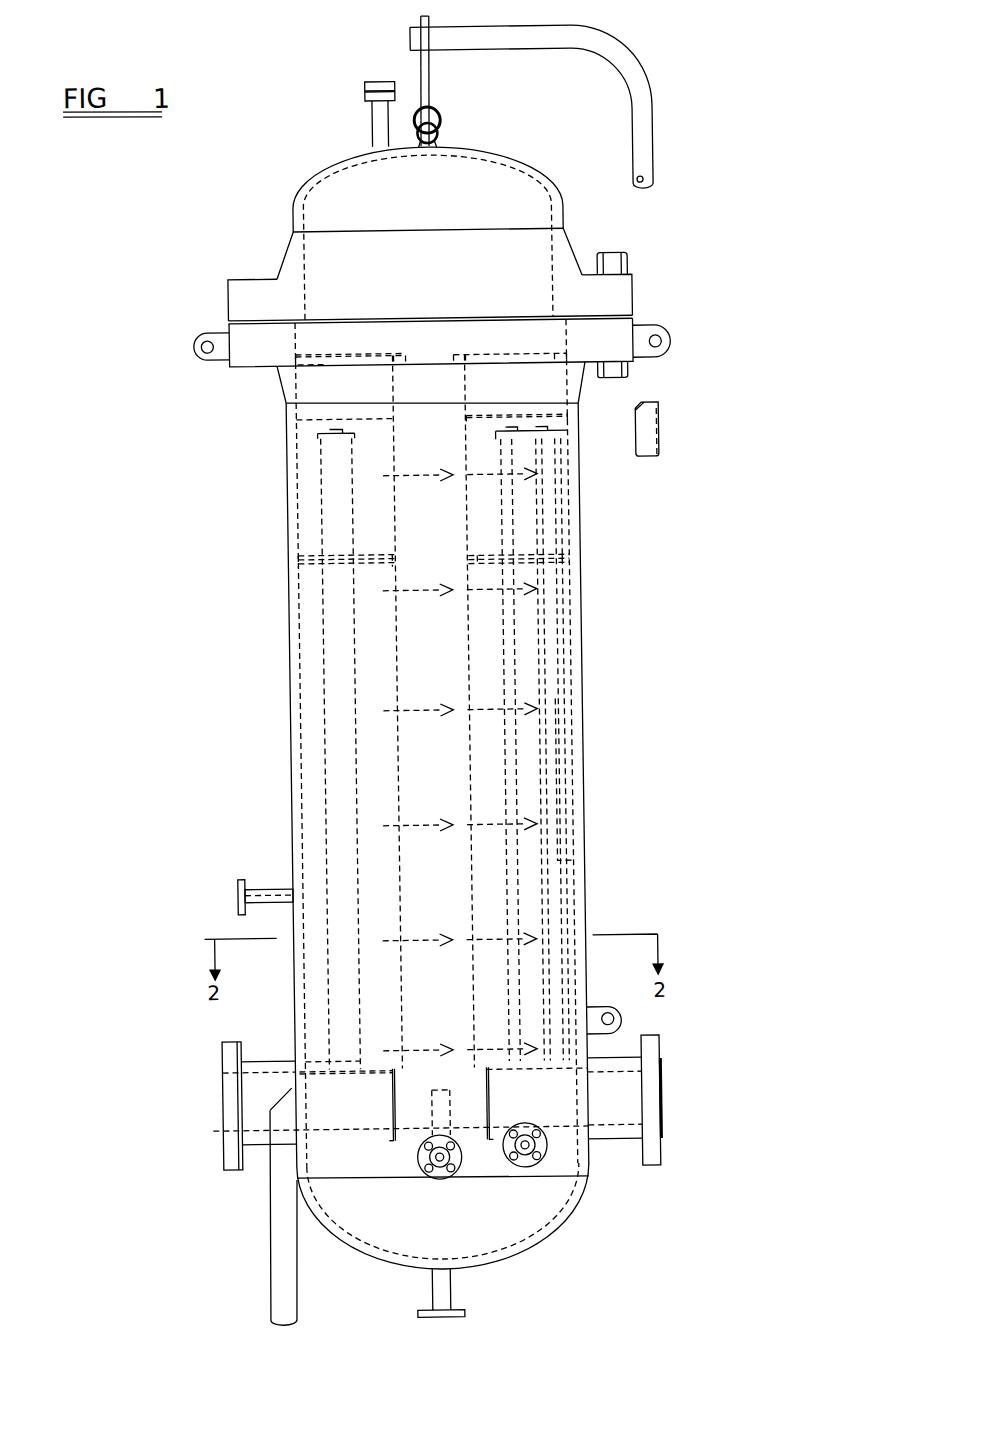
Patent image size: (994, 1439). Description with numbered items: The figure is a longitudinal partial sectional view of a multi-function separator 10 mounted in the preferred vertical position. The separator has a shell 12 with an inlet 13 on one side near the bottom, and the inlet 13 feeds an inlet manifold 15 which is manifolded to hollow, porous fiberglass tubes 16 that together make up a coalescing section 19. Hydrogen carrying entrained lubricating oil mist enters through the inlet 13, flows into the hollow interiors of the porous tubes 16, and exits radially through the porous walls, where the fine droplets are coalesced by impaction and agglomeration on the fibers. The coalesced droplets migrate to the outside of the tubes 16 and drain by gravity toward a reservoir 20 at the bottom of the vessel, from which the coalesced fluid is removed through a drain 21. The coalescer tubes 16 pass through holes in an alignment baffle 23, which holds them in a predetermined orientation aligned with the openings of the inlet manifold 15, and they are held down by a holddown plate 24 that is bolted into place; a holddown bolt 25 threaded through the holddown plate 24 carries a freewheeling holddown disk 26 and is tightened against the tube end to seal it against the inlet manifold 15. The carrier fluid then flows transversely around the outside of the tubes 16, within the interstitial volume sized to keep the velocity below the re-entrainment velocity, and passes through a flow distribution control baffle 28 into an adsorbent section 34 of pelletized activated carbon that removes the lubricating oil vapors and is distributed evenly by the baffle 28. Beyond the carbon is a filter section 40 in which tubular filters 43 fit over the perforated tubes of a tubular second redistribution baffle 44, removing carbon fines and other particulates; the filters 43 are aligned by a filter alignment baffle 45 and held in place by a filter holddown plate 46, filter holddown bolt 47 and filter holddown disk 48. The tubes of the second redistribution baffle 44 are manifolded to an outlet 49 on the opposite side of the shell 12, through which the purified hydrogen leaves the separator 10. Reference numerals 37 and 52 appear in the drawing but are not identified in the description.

The multi-function separator 10 is at (718, 140).
The shell 12 is at (583, 727).
The inlet 13 is at (218, 1115).
The inlet manifold 15 is at (316, 1061).
The porous fiberglass tubes 16 is at (335, 764).
The coalescing section 19 is at (314, 640).
The reservoir 20 is at (542, 1208).
The drain 21 is at (446, 1293).
The alignment baffle 23 is at (313, 553).
The holddown plate 24 is at (285, 385).
The holddown bolt 25 is at (342, 399).
The holddown disk 26 is at (322, 430).
The flow distribution control baffle 28 is at (399, 797).
The adsorbent section 34 is at (441, 655).
The outer filter tube 37 is at (560, 500).
The filter section 40 is at (484, 806).
The tubular filters 43 is at (557, 862).
The second redistribution baffle 44 is at (552, 434).
The filter alignment baffle 45 is at (488, 554).
The filter holddown plate 46 is at (488, 418).
The filter holddown bolt 47 is at (522, 404).
The filter holddown disk 48 is at (532, 404).
The outlet 49 is at (655, 1113).
The cover flange 52 is at (261, 277).